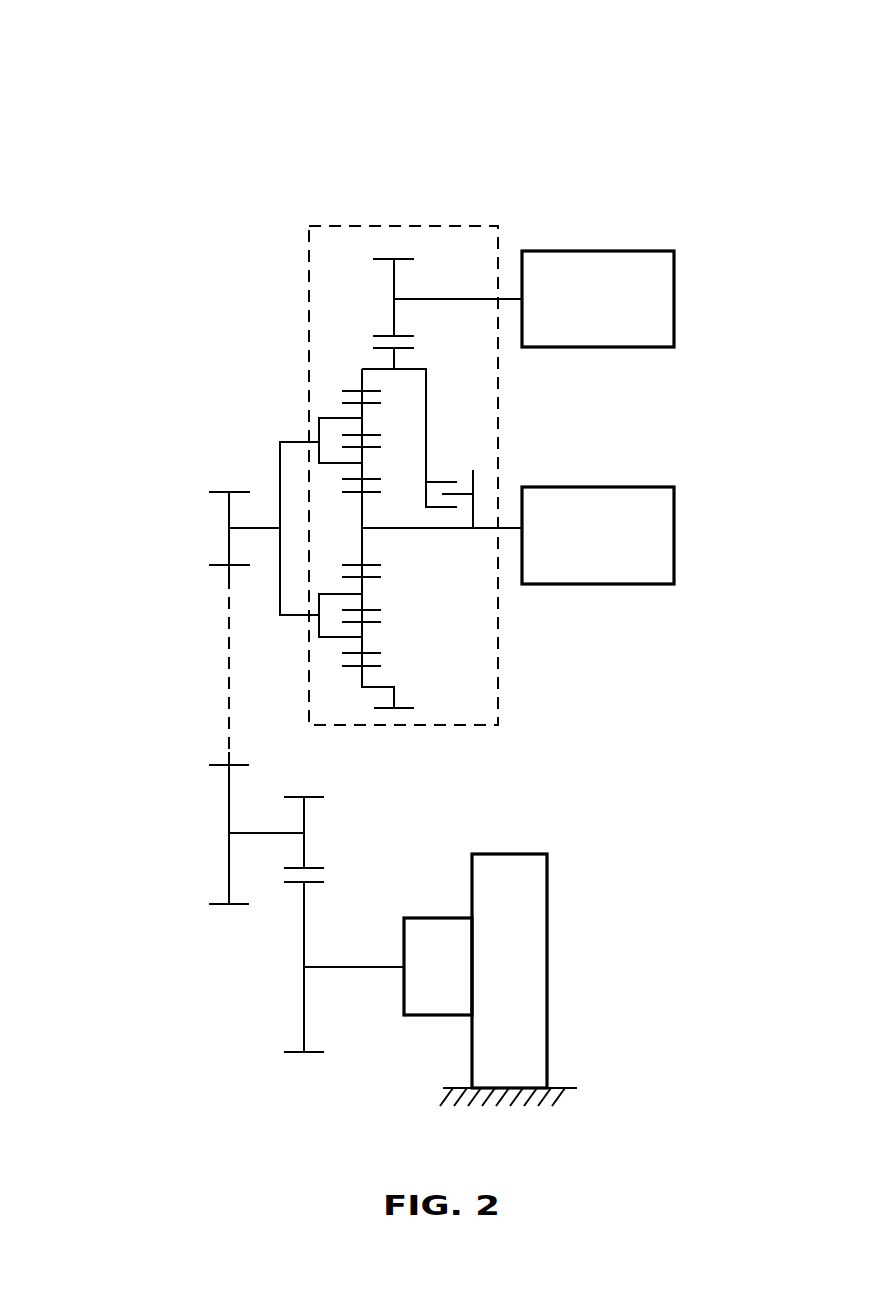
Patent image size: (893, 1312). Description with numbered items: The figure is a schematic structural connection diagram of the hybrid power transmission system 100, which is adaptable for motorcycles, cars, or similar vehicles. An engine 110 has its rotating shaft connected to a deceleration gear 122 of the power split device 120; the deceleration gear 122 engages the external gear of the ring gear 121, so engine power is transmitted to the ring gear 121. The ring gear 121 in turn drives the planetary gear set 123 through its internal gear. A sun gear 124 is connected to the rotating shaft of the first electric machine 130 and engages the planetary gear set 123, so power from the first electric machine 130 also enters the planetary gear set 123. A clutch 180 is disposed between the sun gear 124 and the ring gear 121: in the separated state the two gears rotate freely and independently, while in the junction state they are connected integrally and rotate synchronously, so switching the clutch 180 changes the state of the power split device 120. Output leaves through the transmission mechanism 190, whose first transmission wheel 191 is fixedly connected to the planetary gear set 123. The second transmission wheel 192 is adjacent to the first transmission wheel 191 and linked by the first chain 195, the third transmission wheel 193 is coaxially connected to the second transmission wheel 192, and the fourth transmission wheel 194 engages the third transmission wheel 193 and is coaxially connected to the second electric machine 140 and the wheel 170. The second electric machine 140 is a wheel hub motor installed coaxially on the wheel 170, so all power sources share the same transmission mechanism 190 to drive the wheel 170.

The hybrid power transmission system 100 is at (712, 1107).
The engine 110 is at (676, 300).
The power split device 120 is at (309, 253).
The ring gear 121 is at (361, 382).
The deceleration gear 122 is at (394, 259).
The planetary gear set 123 is at (330, 595).
The sun gear 124 is at (362, 543).
The first electric machine 130 is at (676, 535).
The second electric machine 140 is at (438, 917).
The wheel 170 is at (549, 970).
The clutch 180 is at (463, 491).
The transmission mechanism 190 is at (97, 8).
The first transmission wheel 191 is at (227, 517).
The second transmission wheel 192 is at (227, 798).
The third transmission wheel 193 is at (306, 815).
The fourth transmission wheel 194 is at (302, 1013).
The first chain 195 is at (228, 638).